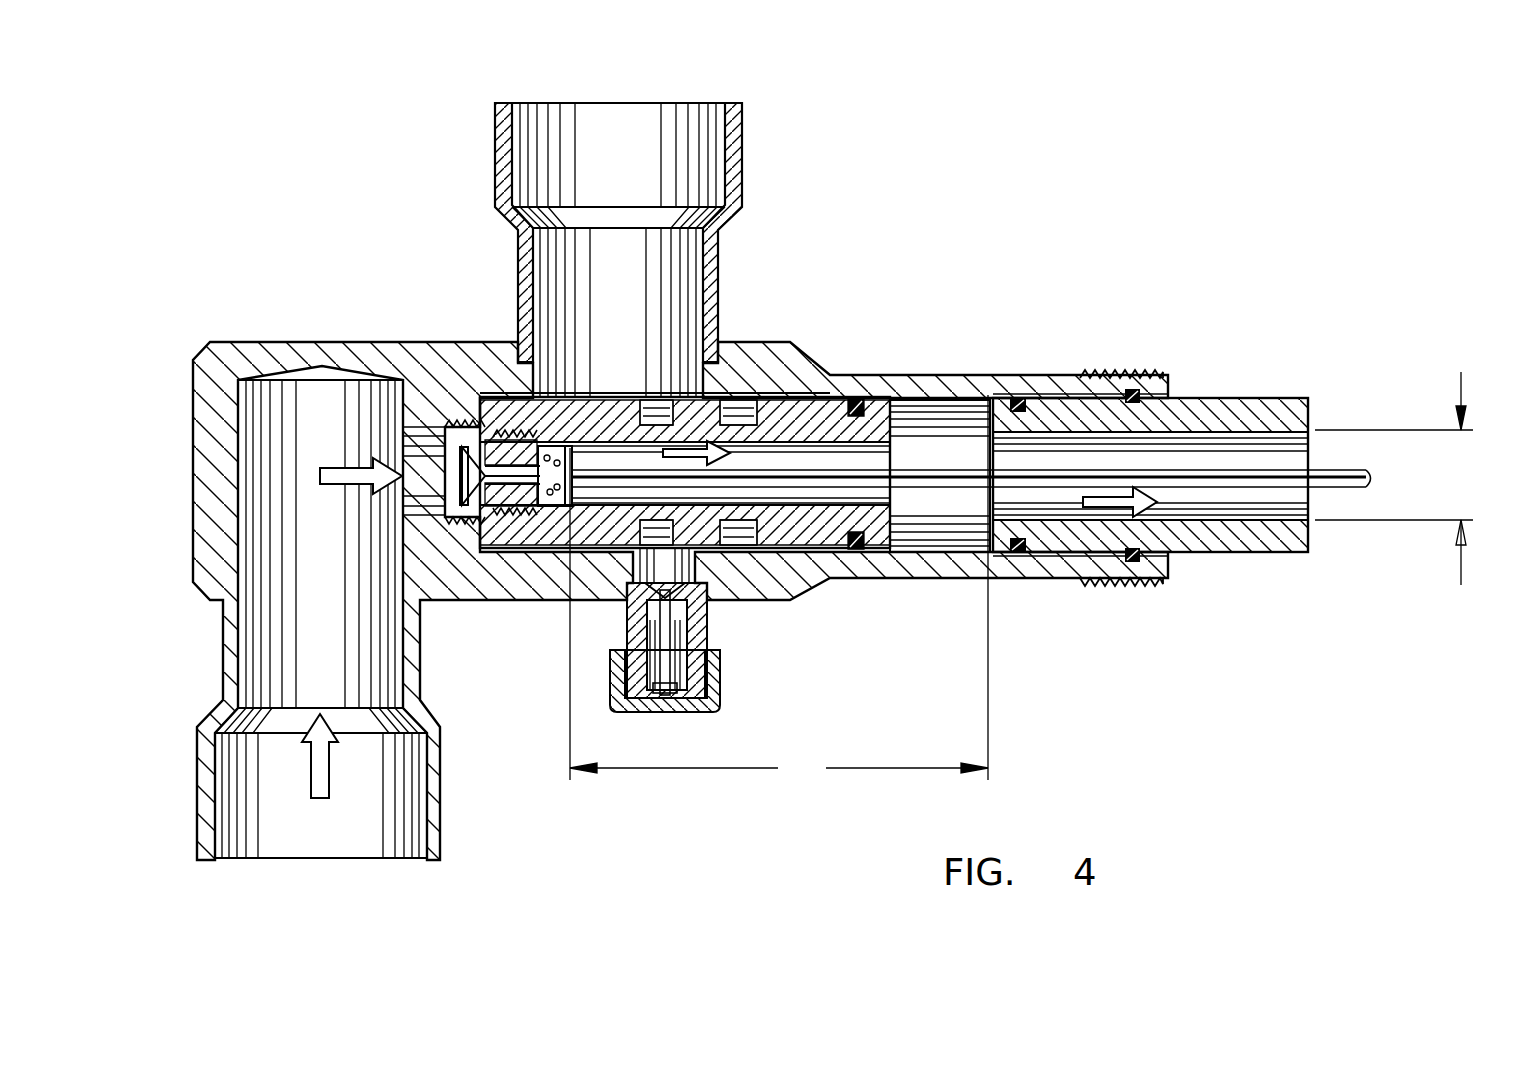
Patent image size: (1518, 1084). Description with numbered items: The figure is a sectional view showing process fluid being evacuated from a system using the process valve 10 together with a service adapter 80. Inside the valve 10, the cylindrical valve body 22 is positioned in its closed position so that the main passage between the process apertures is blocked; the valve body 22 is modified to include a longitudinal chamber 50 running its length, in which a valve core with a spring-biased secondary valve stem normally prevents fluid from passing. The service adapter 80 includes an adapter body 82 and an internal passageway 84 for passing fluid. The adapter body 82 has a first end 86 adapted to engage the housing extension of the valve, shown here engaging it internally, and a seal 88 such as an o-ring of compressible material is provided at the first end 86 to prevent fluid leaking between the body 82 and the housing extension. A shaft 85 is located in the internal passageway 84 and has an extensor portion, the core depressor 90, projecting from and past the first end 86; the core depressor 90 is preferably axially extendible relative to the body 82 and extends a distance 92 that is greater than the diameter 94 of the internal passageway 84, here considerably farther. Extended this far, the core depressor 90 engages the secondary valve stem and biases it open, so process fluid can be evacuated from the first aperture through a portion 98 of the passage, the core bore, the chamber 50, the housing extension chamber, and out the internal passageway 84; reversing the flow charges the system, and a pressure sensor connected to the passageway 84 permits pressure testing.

The process valve 10 is at (360, 254).
The valve body 22 is at (568, 432).
The longitudinal chamber 50 is at (767, 497).
The service adapter 80 is at (1228, 283).
The adapter body 82 is at (1263, 398).
The internal passageway 84 is at (1232, 459).
The shaft 85 is at (1258, 487).
The first end 86 is at (935, 416).
The seal 88 is at (1020, 398).
The core depressor 90 is at (752, 470).
The distance 92 is at (779, 591).
The diameter 94 is at (1025, 478).
The portion of the passage 98 is at (338, 446).